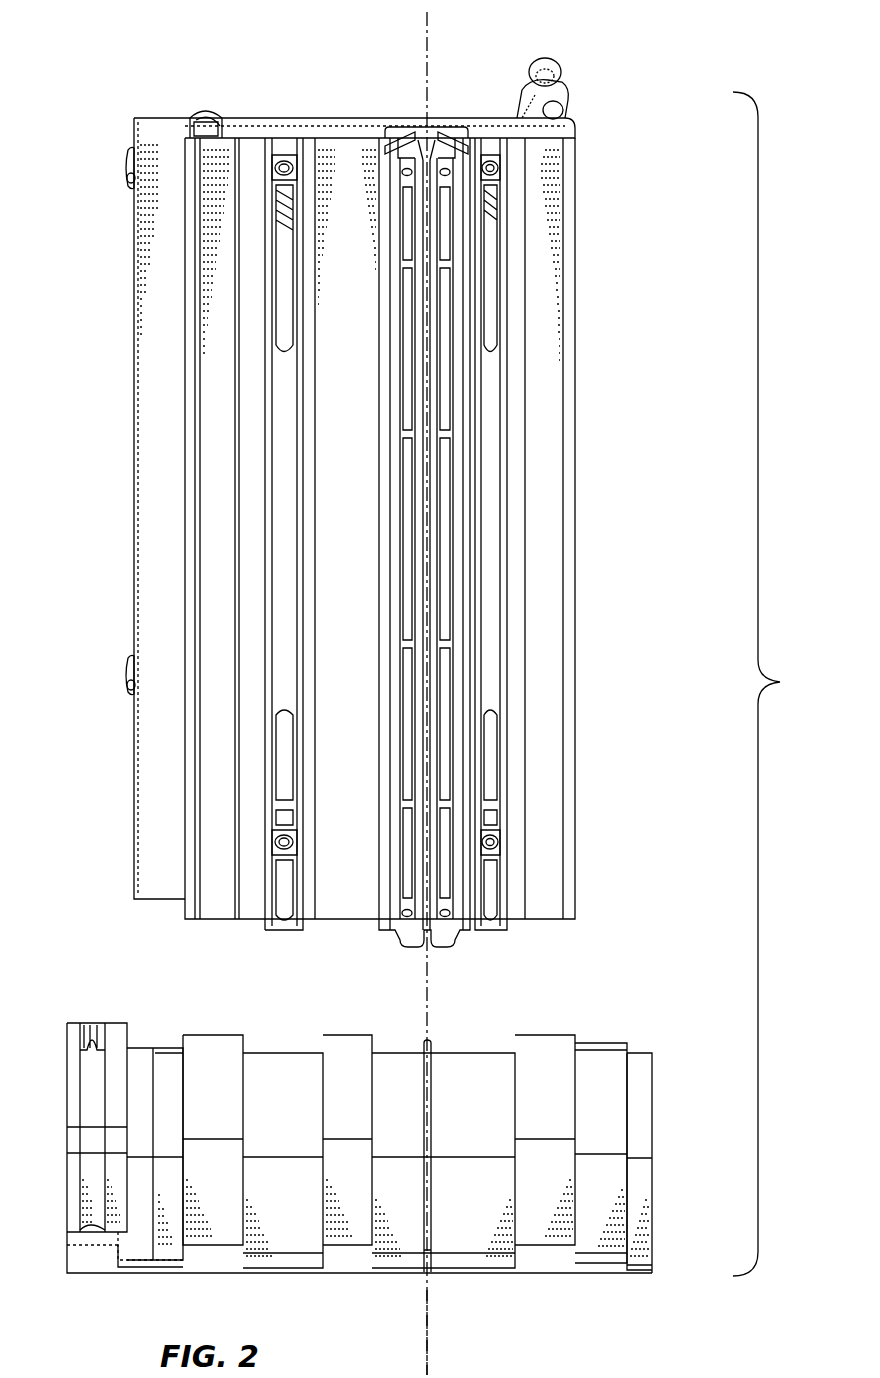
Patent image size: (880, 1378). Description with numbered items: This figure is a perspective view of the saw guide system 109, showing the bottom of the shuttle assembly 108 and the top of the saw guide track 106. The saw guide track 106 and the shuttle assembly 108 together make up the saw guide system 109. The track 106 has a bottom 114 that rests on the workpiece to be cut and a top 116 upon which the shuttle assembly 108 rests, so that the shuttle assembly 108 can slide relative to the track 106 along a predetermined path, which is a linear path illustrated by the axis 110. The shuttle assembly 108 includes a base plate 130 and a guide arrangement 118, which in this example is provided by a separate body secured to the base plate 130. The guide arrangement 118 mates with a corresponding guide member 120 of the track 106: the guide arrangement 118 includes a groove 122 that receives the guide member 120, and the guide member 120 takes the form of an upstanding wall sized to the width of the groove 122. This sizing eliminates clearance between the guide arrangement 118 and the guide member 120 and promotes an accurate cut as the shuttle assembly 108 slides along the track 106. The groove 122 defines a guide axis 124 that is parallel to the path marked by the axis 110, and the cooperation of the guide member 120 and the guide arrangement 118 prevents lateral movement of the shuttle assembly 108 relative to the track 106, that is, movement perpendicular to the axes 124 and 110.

The saw guide track 106 is at (672, 1034).
The shuttle assembly 108 is at (617, 422).
The saw guide system 109 is at (780, 684).
The axis 110 is at (427, 1322).
The bottom 114 is at (472, 1290).
The top 116 is at (165, 995).
The guide arrangement 118 is at (382, 266).
The guide member 120 is at (428, 1086).
The groove 122 is at (428, 688).
The guide axis 124 is at (428, 48).
The base plate 130 is at (340, 425).